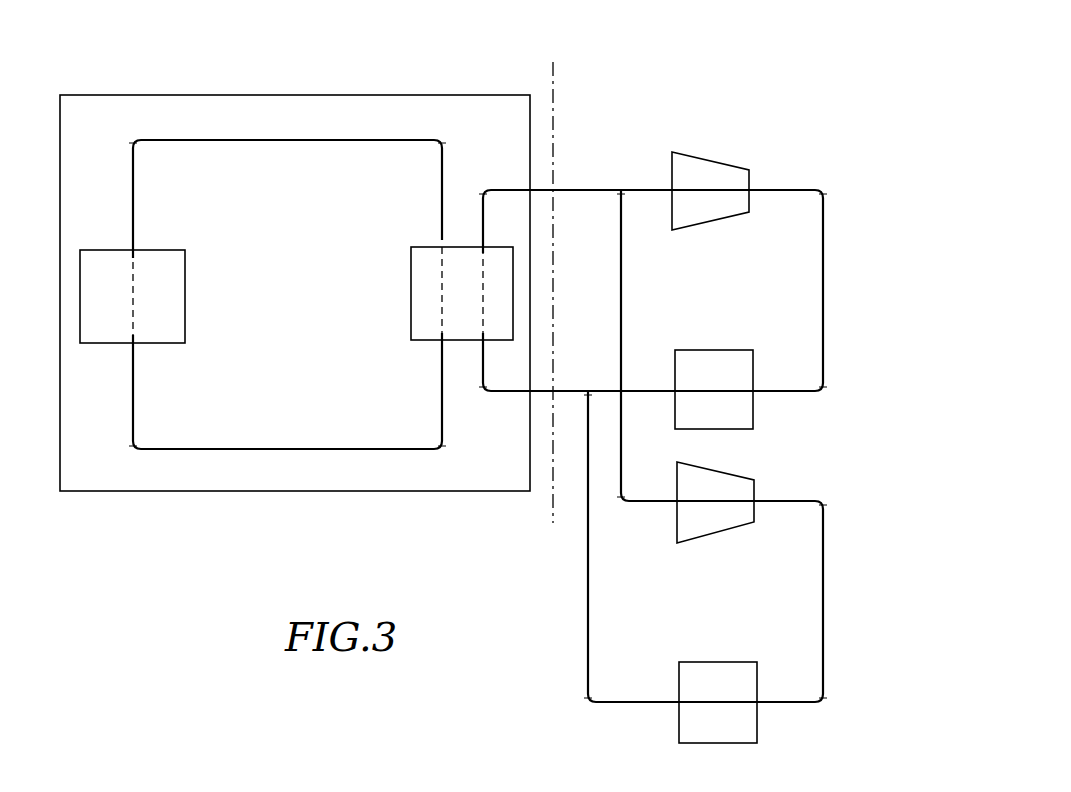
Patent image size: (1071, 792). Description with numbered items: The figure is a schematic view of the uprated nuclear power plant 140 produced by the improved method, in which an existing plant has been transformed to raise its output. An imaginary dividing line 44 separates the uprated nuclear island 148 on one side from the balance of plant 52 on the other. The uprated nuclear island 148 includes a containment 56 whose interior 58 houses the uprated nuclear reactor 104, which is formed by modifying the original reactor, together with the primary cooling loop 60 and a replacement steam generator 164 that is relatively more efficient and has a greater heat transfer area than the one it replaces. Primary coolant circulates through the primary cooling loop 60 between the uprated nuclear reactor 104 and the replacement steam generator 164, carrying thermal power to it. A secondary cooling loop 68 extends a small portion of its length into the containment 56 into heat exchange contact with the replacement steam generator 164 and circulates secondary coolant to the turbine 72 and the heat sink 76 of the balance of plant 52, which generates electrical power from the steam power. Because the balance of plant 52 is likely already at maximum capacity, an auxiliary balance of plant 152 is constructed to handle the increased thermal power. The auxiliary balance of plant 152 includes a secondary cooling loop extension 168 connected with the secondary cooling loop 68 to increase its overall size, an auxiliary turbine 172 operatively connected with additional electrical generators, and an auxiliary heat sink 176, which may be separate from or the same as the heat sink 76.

The containment 56 is at (143, 95).
The interior 58 is at (84, 140).
The uprated nuclear power plant 140 is at (281, 84).
The primary cooling loop 60 is at (246, 141).
The uprated nuclear reactor 104 is at (197, 278).
The replacement steam generator 164 is at (411, 273).
The secondary cooling loop 68 is at (490, 188).
The turbine 72 is at (716, 158).
The balance of plant 52 is at (695, 138).
The heat sink 76 is at (708, 350).
The dividing line 44 is at (554, 108).
The uprated nuclear island 148 is at (537, 63).
The secondary cooling loop extension 168 is at (781, 501).
The auxiliary turbine 172 is at (716, 471).
The auxiliary heat sink 176 is at (708, 662).
The auxiliary balance of plant 152 is at (577, 595).